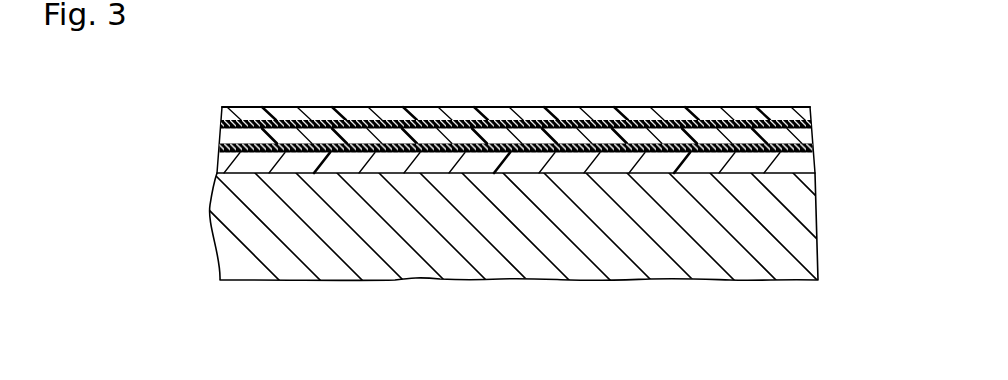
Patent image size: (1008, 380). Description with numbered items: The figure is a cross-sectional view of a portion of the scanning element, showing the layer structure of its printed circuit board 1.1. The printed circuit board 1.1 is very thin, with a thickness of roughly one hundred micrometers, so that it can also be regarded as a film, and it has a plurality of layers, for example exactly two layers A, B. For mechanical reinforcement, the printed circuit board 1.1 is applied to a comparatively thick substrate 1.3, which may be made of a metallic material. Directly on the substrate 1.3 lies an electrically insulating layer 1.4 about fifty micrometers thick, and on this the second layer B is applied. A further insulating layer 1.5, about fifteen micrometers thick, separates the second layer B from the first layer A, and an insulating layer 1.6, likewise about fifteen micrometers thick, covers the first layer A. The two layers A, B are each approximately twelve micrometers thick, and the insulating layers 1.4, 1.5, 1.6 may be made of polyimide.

The printed circuit board 1.1 is at (152, 154).
The substrate 1.3 is at (536, 263).
The electrically insulating layer 1.4 is at (221, 165).
The further insulating layer 1.5 is at (811, 136).
The insulating layer 1.6 is at (811, 108).
The first layer A is at (226, 129).
The second layer B is at (807, 150).